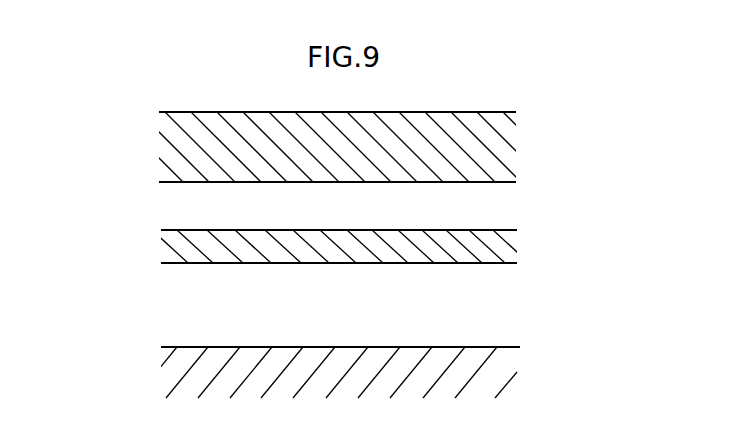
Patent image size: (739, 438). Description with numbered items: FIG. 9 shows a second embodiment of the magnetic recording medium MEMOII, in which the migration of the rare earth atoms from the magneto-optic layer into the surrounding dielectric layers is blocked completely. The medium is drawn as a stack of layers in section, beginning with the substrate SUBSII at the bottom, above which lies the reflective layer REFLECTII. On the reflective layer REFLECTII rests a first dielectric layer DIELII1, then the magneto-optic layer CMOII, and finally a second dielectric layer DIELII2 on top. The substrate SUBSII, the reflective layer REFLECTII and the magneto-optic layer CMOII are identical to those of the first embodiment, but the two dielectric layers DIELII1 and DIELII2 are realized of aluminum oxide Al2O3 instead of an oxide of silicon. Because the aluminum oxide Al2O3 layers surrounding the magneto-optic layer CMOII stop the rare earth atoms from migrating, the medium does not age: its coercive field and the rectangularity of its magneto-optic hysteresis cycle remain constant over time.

The second dielectric layer DIELII2 is at (522, 151).
The aluminum oxide Al2O3 is at (298, 147).
The magneto-optic layer CMOII is at (522, 204).
The first dielectric layer DIELII1 is at (522, 249).
The recording medium MEMOII is at (124, 257).
The reflective layer REFLECTII is at (522, 306).
The substrate SUBSII is at (522, 378).